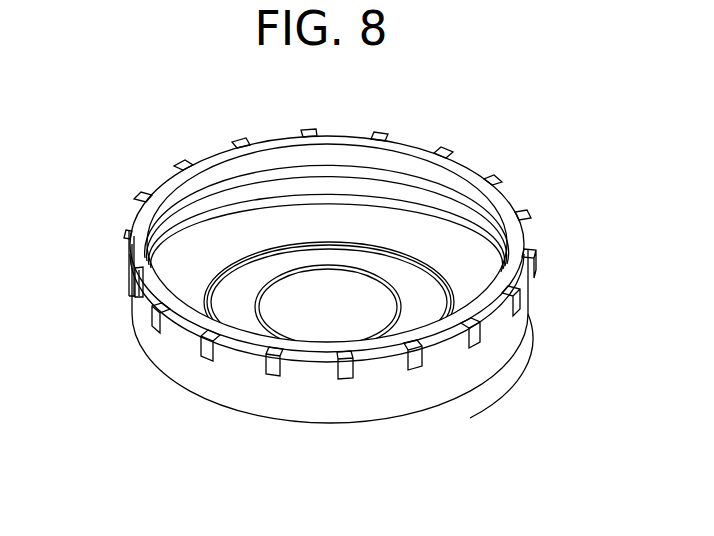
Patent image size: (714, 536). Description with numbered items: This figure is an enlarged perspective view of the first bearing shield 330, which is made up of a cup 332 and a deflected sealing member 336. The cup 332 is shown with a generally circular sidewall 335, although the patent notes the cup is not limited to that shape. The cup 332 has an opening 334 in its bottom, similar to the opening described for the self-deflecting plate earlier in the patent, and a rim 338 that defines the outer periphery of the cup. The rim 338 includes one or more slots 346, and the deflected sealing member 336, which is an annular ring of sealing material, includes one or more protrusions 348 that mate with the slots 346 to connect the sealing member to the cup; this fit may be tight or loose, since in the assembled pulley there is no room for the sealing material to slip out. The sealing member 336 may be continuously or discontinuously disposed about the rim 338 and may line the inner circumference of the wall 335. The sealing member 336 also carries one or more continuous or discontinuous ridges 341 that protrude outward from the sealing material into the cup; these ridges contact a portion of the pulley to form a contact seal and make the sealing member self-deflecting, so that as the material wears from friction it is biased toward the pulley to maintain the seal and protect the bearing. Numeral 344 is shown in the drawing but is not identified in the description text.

The first bearing shield 330 is at (177, 382).
The cup 332 is at (450, 390).
The opening 334 is at (347, 327).
The sidewall 335 is at (336, 408).
The deflected sealing member 336 is at (437, 168).
The rim 338 is at (142, 305).
The ridge 341 is at (277, 177).
The recessed floor 344 is at (462, 278).
The slots 346 is at (440, 372).
The protrusions 348 is at (475, 338).